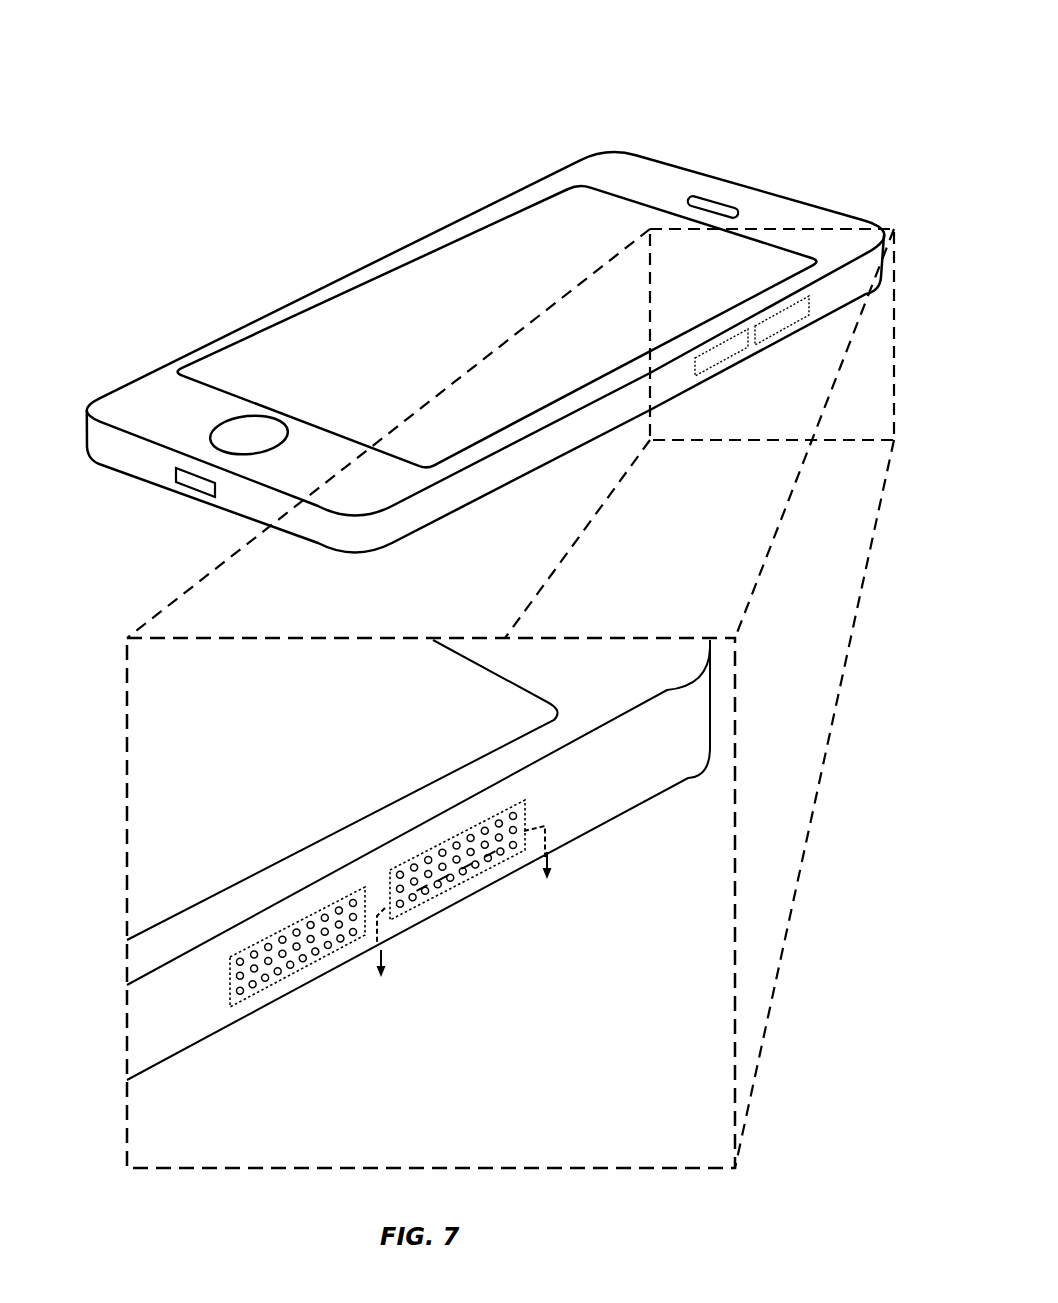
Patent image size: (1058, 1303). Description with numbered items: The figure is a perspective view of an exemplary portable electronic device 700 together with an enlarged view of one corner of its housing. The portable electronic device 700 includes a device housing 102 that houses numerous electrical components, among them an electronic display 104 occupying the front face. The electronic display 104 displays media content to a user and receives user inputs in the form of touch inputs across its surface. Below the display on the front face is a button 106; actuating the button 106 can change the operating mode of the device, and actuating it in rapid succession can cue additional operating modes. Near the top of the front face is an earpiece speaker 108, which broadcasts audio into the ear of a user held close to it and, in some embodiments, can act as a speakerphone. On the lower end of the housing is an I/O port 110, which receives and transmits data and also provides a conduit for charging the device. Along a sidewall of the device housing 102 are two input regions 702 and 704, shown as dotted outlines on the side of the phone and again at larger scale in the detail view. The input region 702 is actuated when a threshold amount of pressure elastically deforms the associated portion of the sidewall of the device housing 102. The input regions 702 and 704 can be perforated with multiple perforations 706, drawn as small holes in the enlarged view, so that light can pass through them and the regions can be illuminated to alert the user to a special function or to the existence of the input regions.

The portable electronic device 700 is at (809, 122).
The device housing 102 is at (87, 417).
The electronic display 104 is at (471, 563).
The button 106 is at (210, 432).
The earpiece speaker 108 is at (707, 201).
The I/O port 110 is at (181, 487).
The input region 702 is at (782, 332).
The input region 704 is at (726, 360).
The perforations 706 is at (270, 963).